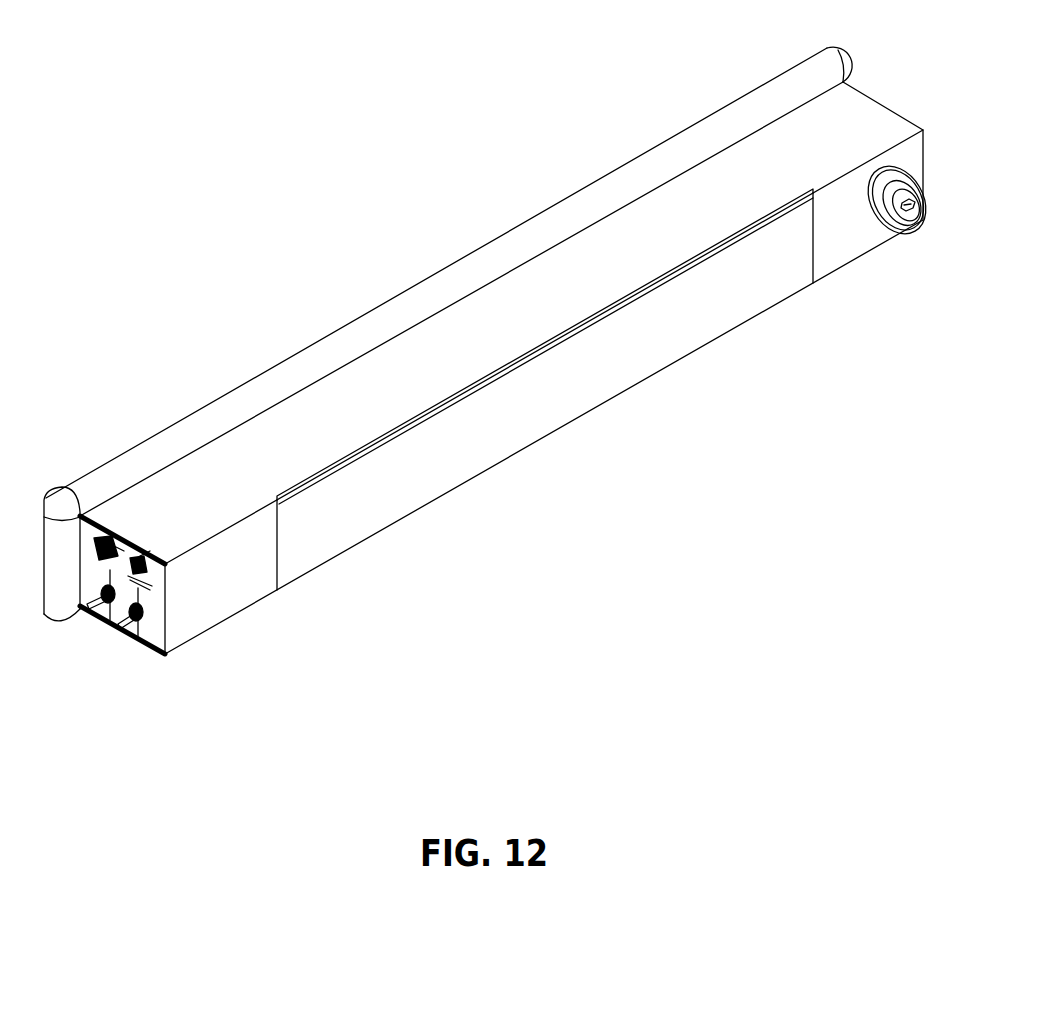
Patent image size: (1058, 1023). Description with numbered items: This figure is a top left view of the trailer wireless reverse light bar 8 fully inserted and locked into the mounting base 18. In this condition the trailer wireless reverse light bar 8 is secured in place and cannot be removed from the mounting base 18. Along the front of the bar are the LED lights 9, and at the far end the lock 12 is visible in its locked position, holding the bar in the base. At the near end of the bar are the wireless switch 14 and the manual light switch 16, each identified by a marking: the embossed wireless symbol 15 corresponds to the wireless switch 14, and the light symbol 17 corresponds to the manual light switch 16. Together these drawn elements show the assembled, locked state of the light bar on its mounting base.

The trailer wireless reverse light bar 8 is at (607, 215).
The LED lights 9 is at (613, 402).
The lock 12 is at (907, 232).
The wireless switch 14 is at (95, 615).
The embossed wireless symbol 15 is at (104, 537).
The manual light switch 16 is at (124, 612).
The light symbol 17 is at (131, 562).
The mounting base 18 is at (403, 288).